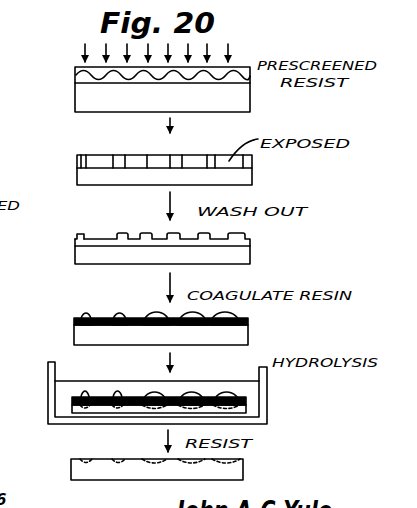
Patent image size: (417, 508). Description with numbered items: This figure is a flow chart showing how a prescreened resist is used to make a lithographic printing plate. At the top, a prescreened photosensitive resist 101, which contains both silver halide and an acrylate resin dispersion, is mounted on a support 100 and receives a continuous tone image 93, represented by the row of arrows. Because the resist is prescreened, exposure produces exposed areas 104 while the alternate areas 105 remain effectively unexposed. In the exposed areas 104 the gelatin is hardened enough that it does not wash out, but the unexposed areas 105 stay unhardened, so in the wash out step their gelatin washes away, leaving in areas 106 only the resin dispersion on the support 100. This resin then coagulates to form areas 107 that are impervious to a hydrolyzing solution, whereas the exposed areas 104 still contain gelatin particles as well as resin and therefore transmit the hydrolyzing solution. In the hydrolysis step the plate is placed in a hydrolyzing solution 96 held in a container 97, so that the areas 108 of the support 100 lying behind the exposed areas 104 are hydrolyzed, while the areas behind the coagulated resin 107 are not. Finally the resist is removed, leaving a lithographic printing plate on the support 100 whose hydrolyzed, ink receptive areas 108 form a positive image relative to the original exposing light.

The continuous tone image 93 is at (83, 55).
The prescreened photosensitive resist 101 is at (75, 73).
The support 100 is at (79, 92).
The unexposed areas 105 is at (80, 158).
The exposed areas 104 is at (88, 164).
The washed-out areas 106 is at (80, 237).
The coagulated resin areas 107 is at (80, 316).
The hydrolyzing solution 96 is at (52, 384).
The container 97 is at (60, 392).
The hydrolyzed areas 108 is at (88, 406).